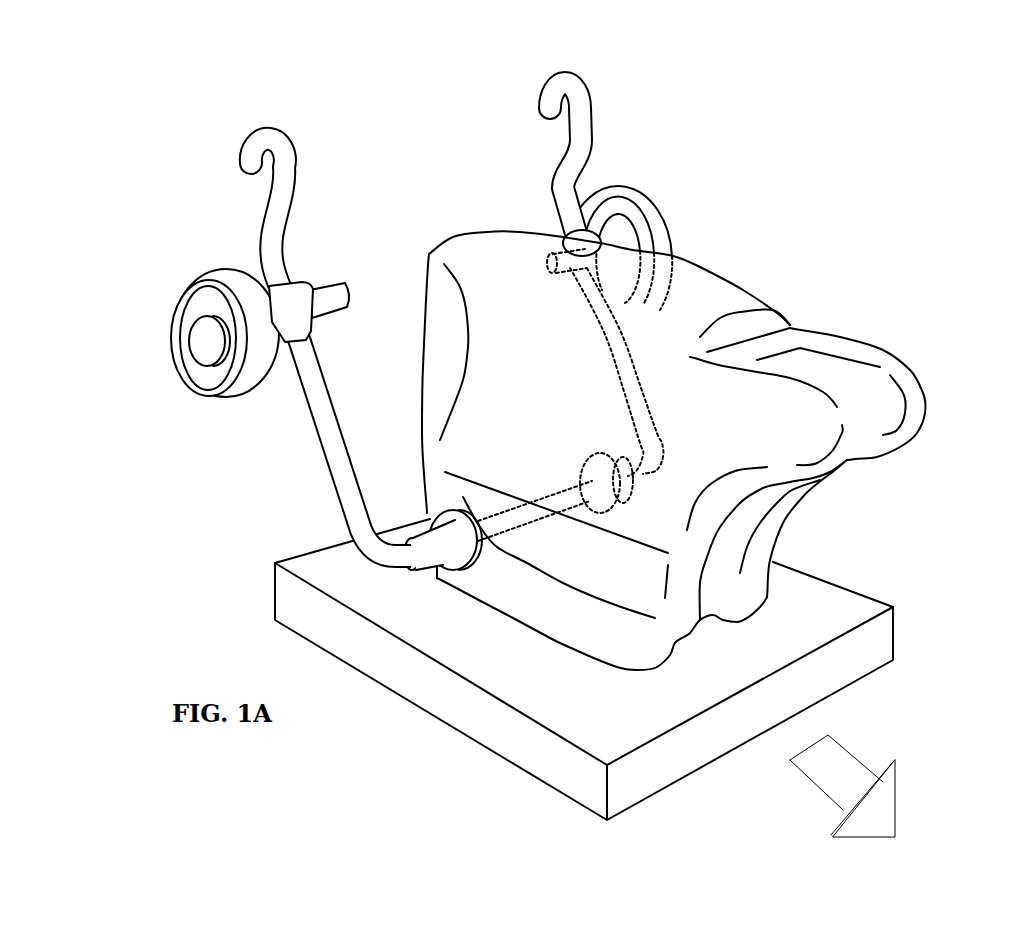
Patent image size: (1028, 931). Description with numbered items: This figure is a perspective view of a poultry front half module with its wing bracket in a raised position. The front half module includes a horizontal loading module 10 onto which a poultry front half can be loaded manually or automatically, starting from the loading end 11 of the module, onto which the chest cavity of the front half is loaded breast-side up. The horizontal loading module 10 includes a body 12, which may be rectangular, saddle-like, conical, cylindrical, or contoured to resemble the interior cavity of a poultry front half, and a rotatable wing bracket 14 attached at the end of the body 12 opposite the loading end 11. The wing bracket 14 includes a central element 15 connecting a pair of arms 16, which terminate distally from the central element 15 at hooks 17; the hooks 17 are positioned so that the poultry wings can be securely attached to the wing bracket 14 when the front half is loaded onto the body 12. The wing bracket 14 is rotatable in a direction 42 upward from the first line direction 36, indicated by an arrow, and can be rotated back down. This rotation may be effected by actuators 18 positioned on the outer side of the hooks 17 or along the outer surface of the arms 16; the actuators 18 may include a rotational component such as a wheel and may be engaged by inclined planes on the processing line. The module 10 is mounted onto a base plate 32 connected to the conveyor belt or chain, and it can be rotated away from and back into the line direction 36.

The horizontal loading module 10 is at (863, 288).
The loading end 11 is at (921, 371).
The body 12 is at (477, 260).
The wing bracket 14 is at (243, 218).
The central element 15 is at (519, 520).
The arms 16 is at (320, 443).
The hooks 17 is at (255, 123).
The actuators 18 is at (173, 352).
The base plate 32 is at (323, 573).
The first line direction 36 is at (847, 781).
The direction 42 is at (403, 430).